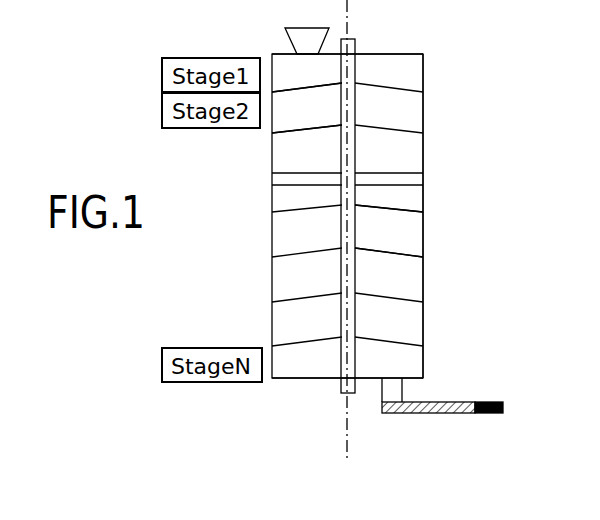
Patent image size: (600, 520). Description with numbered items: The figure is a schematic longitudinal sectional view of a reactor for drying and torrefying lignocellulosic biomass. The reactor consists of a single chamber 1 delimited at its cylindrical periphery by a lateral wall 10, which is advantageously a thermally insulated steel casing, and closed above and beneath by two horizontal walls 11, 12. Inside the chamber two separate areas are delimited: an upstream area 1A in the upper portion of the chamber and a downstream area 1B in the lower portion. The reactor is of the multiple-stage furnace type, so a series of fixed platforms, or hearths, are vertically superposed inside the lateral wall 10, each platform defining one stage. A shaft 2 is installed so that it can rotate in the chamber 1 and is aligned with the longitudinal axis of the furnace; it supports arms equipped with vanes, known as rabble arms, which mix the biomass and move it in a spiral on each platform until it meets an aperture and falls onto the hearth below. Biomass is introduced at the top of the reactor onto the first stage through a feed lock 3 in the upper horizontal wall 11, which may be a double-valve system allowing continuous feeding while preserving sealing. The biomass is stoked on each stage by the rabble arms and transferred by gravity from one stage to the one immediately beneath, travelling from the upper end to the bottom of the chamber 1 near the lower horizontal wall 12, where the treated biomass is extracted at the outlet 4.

The chamber 1 is at (270, 58).
The upstream area 1A is at (307, 108).
The downstream area 1B is at (389, 231).
The shaft 2 is at (357, 44).
The feed lock 3 is at (307, 27).
The outlet 4 is at (395, 390).
The lateral wall 10 is at (423, 75).
The upper horizontal wall 11 is at (400, 54).
The lower horizontal wall 12 is at (305, 380).